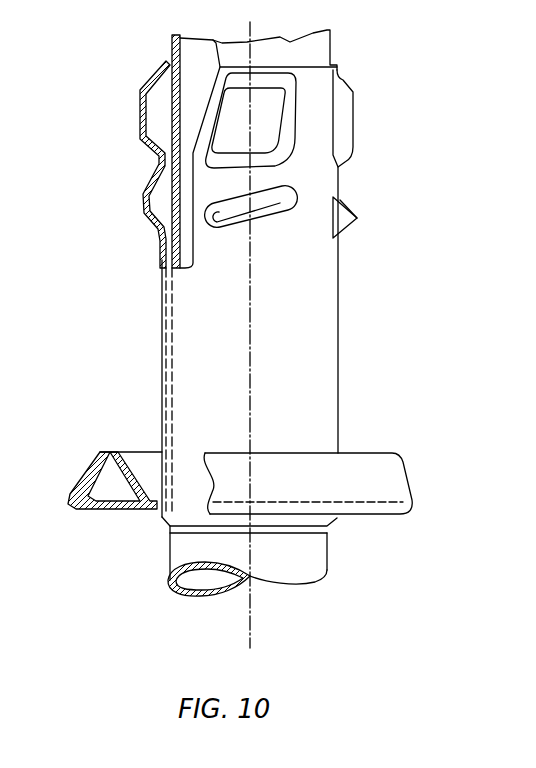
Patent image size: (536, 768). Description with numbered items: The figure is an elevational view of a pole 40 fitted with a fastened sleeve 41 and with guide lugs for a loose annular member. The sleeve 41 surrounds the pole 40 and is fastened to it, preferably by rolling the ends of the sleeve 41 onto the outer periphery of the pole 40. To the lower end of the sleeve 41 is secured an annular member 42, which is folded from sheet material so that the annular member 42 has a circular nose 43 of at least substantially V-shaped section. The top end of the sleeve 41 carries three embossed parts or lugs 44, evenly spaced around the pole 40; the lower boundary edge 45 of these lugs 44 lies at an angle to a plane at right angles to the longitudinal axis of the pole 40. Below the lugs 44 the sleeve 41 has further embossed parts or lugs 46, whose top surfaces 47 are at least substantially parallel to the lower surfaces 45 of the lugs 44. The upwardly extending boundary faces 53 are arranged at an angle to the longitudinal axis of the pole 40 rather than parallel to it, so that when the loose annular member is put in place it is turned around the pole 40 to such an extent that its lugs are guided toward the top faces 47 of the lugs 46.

The pole 40 is at (172, 47).
The sleeve 41 is at (160, 245).
The annular member 42 is at (412, 505).
The circular nose 43 is at (100, 452).
The embossed parts or lugs 44 is at (142, 113).
The lower boundary edge 45 is at (268, 152).
The embossed parts or lugs 46 is at (226, 228).
The top surfaces 47 is at (274, 204).
The upwardly extending boundary faces 53 is at (279, 138).